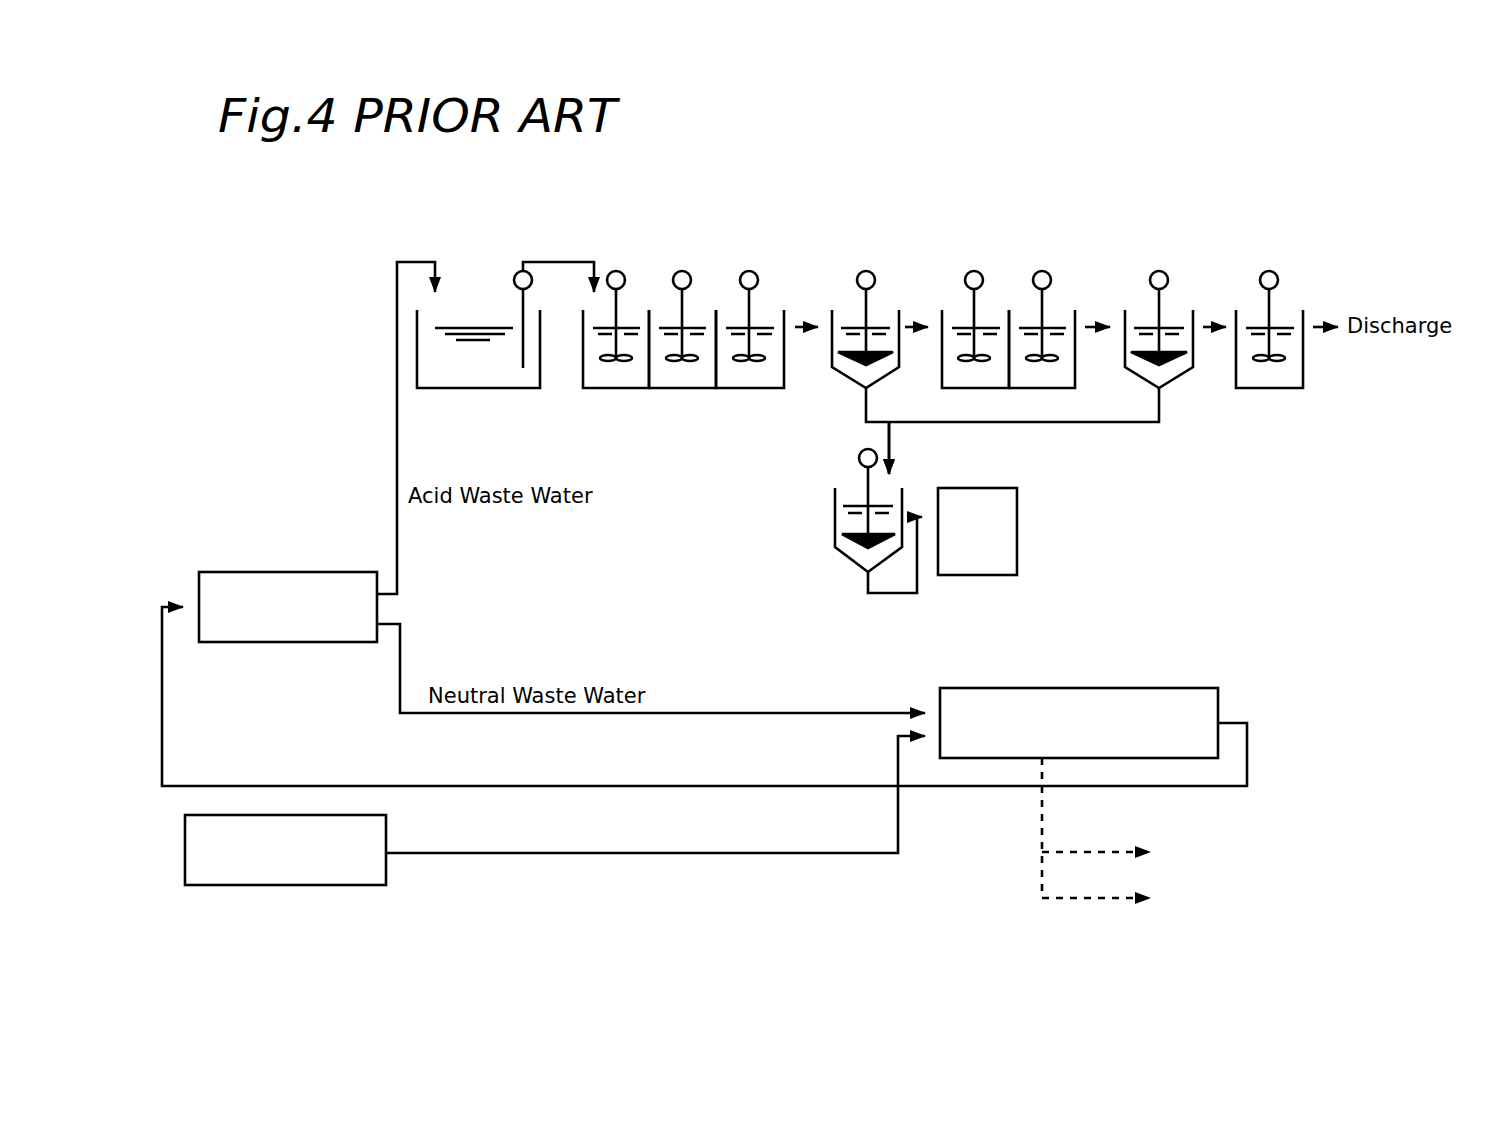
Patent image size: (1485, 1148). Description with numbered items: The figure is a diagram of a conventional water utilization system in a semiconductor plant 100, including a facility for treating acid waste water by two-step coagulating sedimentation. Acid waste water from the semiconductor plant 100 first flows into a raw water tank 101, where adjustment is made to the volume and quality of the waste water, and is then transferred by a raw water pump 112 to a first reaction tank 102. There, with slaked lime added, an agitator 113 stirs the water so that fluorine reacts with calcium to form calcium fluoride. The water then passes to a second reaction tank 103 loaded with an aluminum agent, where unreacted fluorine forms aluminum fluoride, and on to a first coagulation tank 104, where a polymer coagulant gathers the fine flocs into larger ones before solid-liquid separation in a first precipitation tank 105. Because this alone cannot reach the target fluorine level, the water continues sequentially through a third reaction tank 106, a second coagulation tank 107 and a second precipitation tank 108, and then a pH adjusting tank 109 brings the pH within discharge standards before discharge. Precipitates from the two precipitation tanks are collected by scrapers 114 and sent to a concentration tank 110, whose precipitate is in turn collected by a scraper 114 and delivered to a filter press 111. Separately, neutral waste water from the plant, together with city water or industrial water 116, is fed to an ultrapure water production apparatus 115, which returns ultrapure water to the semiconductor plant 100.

The semiconductor plant 100 is at (283, 572).
The raw water tank 101 is at (470, 302).
The first reaction tank 102 is at (633, 302).
The second reaction tank 103 is at (659, 302).
The first coagulation tank 104 is at (767, 300).
The first precipitation tank 105 is at (887, 300).
The third reaction tank 106 is at (987, 302).
The second coagulation tank 107 is at (1063, 300).
The second precipitation tank 108 is at (1173, 300).
The pH adjusting tank 109 is at (1248, 300).
The concentration tank 110 is at (835, 510).
The filter press 111 is at (1018, 515).
The raw water pump 112 is at (516, 274).
The agitator 113 is at (618, 273).
The scraper 114 is at (869, 273).
The ultrapure water production apparatus 115 is at (1085, 688).
The city water or industrial water source 116 is at (386, 830).